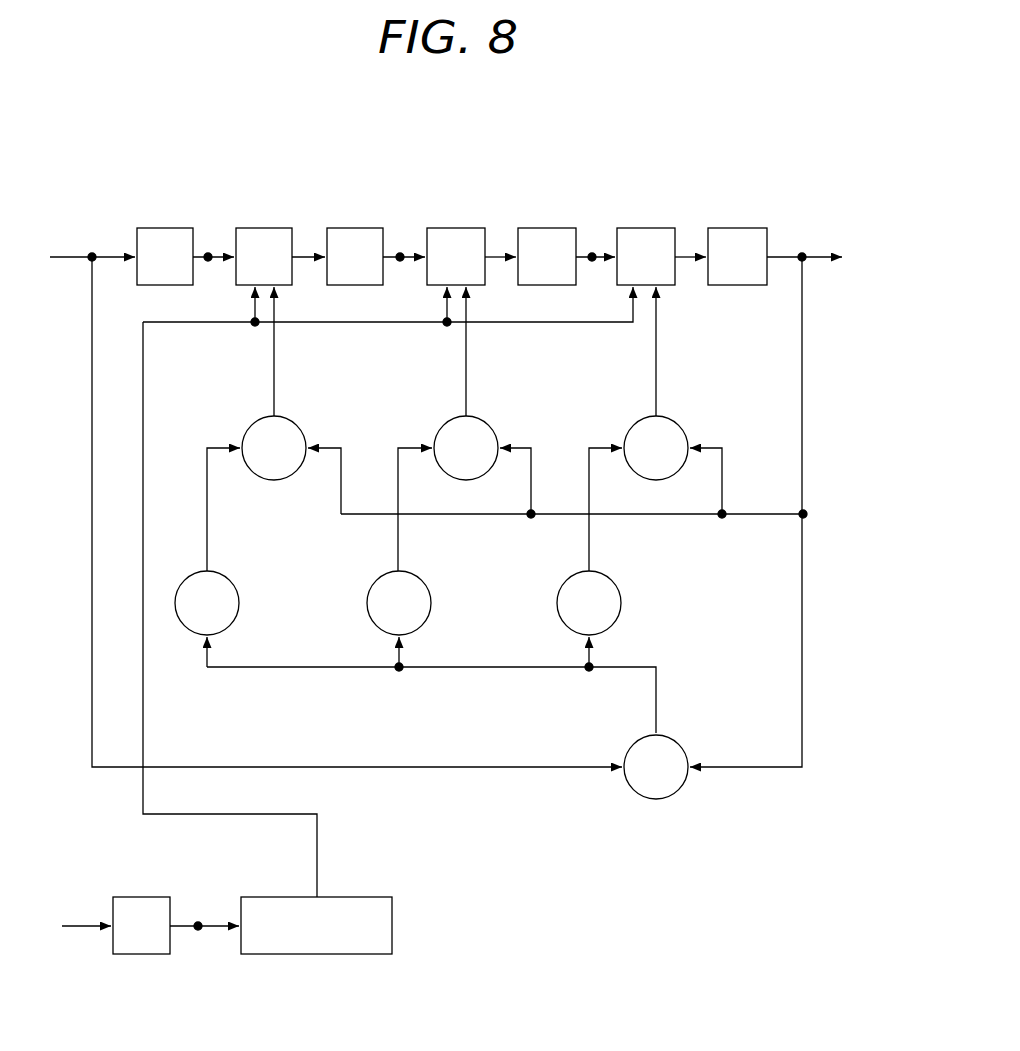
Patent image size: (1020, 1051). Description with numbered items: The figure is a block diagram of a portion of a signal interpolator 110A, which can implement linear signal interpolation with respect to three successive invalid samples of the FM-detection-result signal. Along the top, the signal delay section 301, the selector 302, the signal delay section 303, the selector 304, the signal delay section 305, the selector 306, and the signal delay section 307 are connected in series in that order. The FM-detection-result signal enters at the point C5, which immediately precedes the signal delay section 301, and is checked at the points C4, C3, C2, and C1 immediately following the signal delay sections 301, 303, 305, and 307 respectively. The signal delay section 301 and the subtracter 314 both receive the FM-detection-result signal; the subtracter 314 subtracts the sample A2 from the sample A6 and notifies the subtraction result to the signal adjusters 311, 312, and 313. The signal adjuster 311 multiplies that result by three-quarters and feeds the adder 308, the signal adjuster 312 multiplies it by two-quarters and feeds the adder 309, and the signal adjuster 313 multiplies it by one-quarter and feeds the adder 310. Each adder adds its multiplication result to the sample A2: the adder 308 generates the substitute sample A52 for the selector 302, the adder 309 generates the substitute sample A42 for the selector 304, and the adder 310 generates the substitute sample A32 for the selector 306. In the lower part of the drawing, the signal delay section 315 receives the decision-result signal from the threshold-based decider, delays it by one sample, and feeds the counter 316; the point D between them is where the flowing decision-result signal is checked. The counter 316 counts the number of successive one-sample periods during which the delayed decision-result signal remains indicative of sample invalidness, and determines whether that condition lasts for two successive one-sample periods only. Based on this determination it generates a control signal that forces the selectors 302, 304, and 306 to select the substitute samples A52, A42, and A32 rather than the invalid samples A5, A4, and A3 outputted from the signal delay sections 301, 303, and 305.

The signal interpolator 110A is at (605, 140).
The signal delay section 301 is at (165, 228).
The selector 302 is at (262, 228).
The signal delay section 303 is at (356, 228).
The selector 304 is at (455, 228).
The signal delay section 305 is at (547, 228).
The selector 306 is at (645, 228).
The signal delay section 307 is at (737, 228).
The adder 308 is at (297, 424).
The adder 309 is at (488, 424).
The adder 310 is at (678, 424).
The signal adjuster 311 is at (232, 582).
The signal adjuster 312 is at (423, 582).
The signal adjuster 313 is at (613, 582).
The subtracter 314 is at (678, 743).
The signal delay section 315 is at (140, 897).
The counter 316 is at (364, 897).
The check point C1 is at (804, 250).
The check point C2 is at (594, 250).
The check point C3 is at (402, 250).
The check point C4 is at (210, 250).
The check point C5 is at (95, 250).
The check point D is at (200, 920).